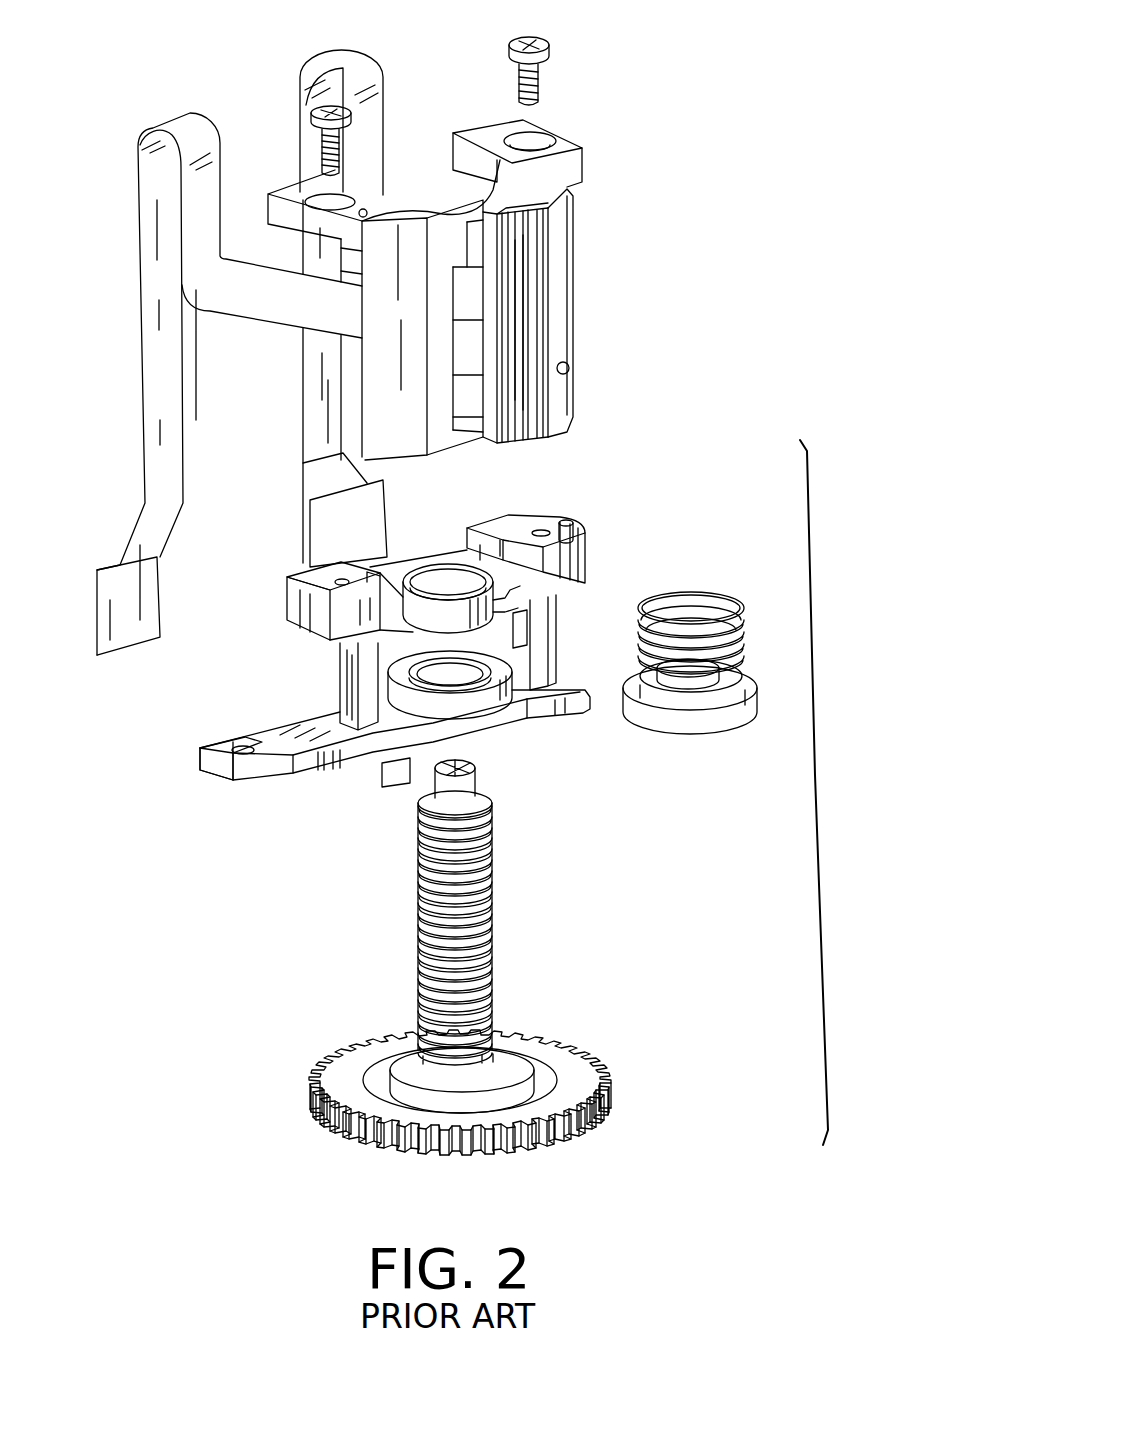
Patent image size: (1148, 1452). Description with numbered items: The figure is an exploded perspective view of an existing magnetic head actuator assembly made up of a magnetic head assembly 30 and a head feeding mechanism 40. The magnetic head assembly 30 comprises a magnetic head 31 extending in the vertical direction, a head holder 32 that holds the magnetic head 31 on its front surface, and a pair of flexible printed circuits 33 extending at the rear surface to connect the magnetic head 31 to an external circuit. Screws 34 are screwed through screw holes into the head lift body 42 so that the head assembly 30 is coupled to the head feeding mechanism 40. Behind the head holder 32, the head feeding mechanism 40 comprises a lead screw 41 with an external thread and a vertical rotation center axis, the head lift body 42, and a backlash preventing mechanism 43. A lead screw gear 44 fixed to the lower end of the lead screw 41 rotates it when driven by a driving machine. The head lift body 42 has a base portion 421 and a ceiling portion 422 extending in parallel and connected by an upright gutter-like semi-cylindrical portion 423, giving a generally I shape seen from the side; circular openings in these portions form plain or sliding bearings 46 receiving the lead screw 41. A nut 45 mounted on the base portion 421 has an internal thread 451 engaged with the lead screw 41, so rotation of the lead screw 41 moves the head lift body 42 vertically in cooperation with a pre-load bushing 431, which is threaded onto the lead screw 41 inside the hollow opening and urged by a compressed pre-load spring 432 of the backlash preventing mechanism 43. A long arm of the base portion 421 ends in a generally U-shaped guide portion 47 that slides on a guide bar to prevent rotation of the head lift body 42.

The magnetic head assembly 30 is at (612, 212).
The magnetic head 31 is at (550, 245).
The head holder 32 is at (565, 313).
The flexible printed circuits 33 is at (383, 78).
The screws 34 is at (551, 44).
The head feeding mechanism 40 is at (824, 775).
The lead screw 41 is at (493, 913).
The head lift body 42 is at (549, 506).
The base portion 421 is at (517, 748).
The ceiling portion 422 is at (310, 598).
The semi-cylindrical portion 423 is at (327, 668).
The backlash preventing mechanism 43 is at (673, 735).
The pre-load bushing 431 is at (757, 684).
The pre-load spring 432 is at (743, 622).
The lead screw gear 44 is at (583, 1053).
The nut 45 is at (413, 700).
The plain or sliding bearing 46 is at (442, 568).
The guide portion 47 is at (220, 765).
The internal thread 451 is at (488, 655).